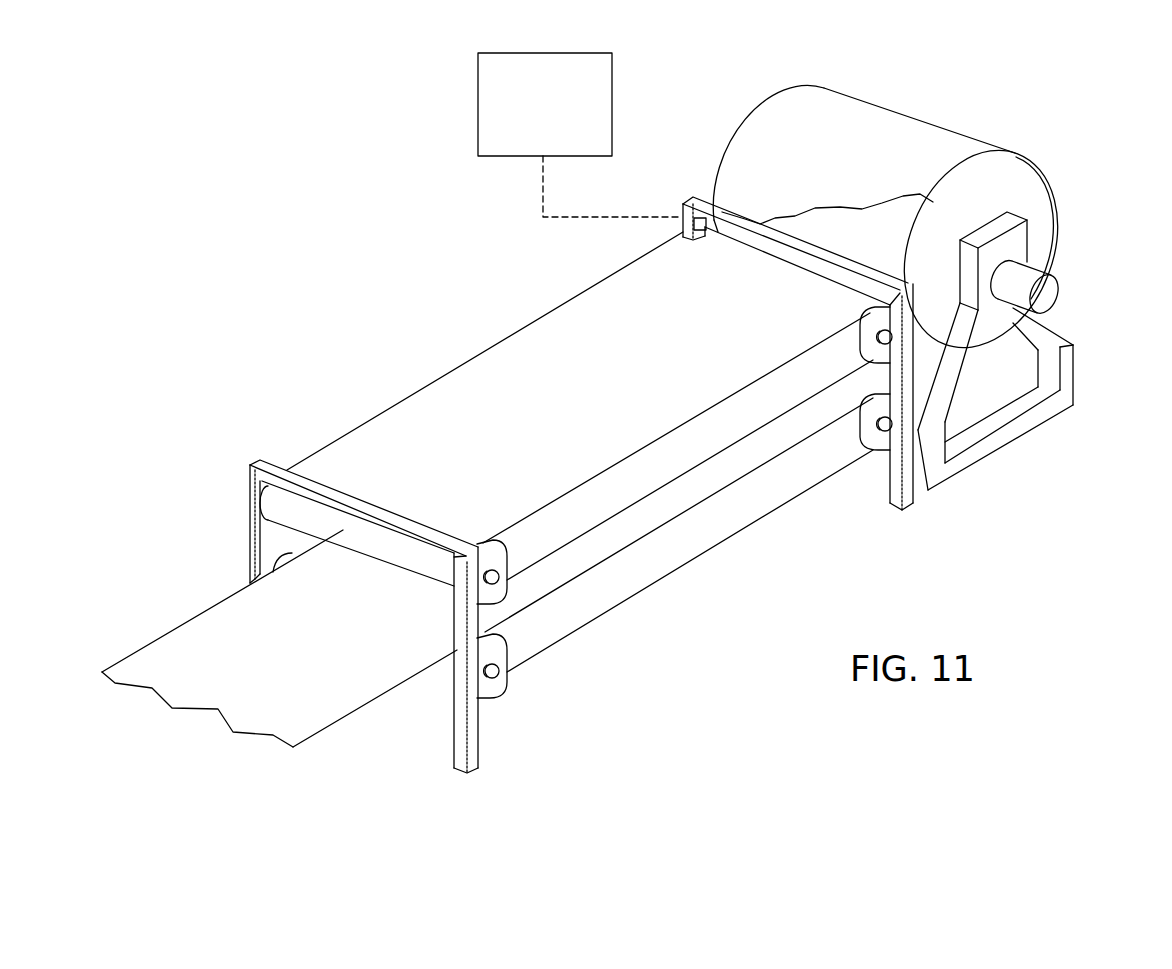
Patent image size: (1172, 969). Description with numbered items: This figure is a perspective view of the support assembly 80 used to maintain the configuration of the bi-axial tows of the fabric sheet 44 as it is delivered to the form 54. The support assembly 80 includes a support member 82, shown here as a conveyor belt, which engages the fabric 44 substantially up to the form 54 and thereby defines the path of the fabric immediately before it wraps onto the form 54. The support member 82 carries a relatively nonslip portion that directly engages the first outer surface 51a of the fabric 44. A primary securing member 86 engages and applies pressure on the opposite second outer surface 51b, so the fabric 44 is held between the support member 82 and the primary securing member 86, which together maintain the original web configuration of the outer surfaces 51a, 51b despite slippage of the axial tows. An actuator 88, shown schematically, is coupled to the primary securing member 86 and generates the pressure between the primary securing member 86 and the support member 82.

The fabric sheet 44 is at (267, 644).
The first outer surface 51a is at (203, 712).
The second outer surface 51b is at (158, 665).
The form 54 is at (1017, 193).
The support assembly 80 is at (477, 728).
The support member 82 is at (447, 665).
The primary securing member 86 is at (357, 455).
The actuator 88 is at (536, 114).